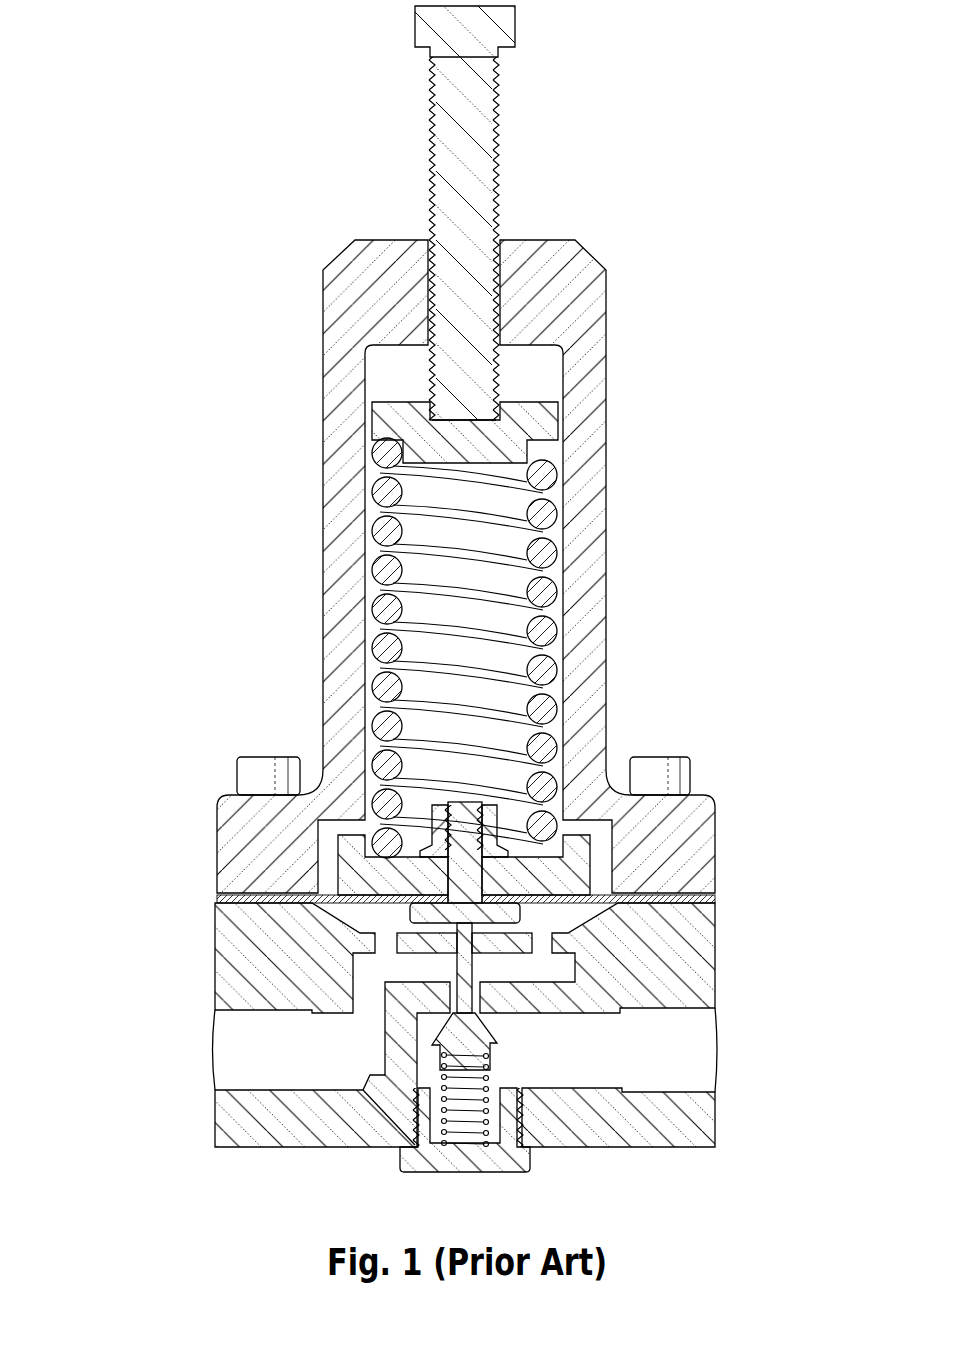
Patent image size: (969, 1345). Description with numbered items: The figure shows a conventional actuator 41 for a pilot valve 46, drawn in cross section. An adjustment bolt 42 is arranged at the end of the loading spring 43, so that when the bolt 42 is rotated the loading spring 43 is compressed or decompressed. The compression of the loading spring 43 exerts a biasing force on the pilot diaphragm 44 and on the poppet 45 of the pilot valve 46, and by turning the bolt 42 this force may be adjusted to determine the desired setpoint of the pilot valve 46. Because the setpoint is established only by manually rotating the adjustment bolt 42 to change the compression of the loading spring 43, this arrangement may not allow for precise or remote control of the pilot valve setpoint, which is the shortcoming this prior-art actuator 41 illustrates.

The actuator 41 is at (657, 188).
The adjustment bolt 42 is at (466, 184).
The loading spring 43 is at (500, 548).
The pilot diaphragm 44 is at (687, 896).
The poppet 45 is at (497, 1040).
The pilot valve 46 is at (171, 999).